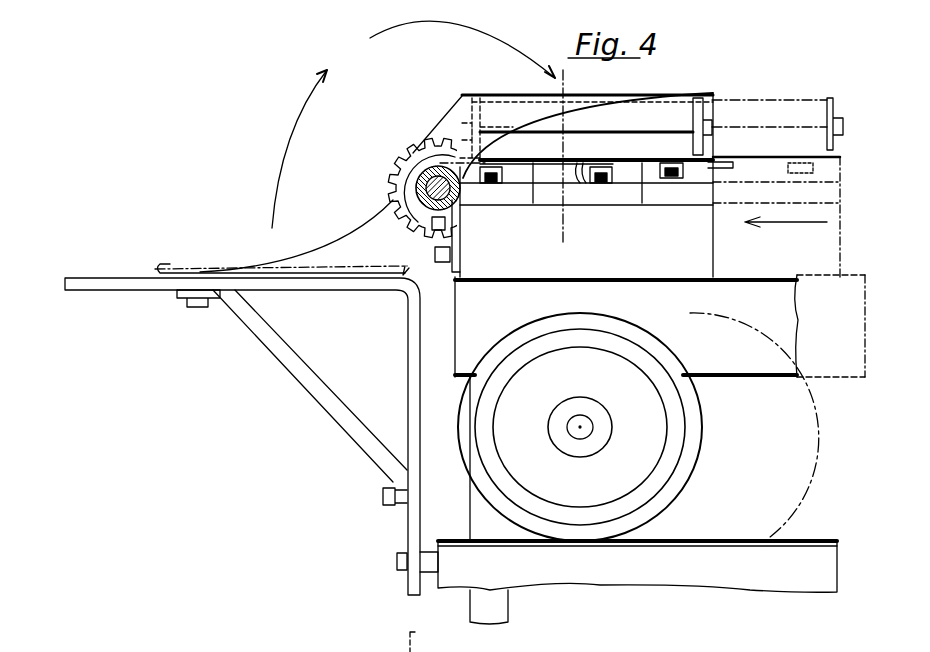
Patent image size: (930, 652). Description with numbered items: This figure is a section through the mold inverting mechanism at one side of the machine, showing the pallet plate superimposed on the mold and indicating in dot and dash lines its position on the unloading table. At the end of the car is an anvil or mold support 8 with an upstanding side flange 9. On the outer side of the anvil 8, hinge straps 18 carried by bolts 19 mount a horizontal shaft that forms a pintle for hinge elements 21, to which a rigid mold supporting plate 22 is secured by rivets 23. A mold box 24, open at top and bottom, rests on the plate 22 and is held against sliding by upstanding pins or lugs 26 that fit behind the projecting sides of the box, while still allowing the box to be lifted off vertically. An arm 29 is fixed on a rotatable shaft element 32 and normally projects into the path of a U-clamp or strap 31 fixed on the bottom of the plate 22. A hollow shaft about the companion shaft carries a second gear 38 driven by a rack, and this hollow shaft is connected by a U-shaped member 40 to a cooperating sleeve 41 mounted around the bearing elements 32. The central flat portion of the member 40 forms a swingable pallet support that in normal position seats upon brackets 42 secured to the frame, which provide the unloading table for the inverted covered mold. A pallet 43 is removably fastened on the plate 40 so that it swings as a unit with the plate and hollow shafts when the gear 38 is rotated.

The anvil 8 is at (590, 81).
The upstanding side flange 9 is at (703, 173).
The hinge strap 18 is at (451, 262).
The bolt 19 is at (435, 229).
The hinge element 21 is at (532, 165).
The mold supporting plate 22 is at (582, 166).
The rivet 23 is at (488, 175).
The mold box 24 is at (627, 118).
The upstanding pin or lug 26 is at (698, 113).
The arm 29 is at (643, 166).
The U-clamp 31 is at (670, 172).
The shaft element 32 is at (418, 181).
The second gear 38 is at (407, 153).
The U-shaped member 40 is at (462, 130).
The sleeve 41 is at (426, 189).
The bracket 42 is at (87, 283).
The pallet 43 is at (188, 270).